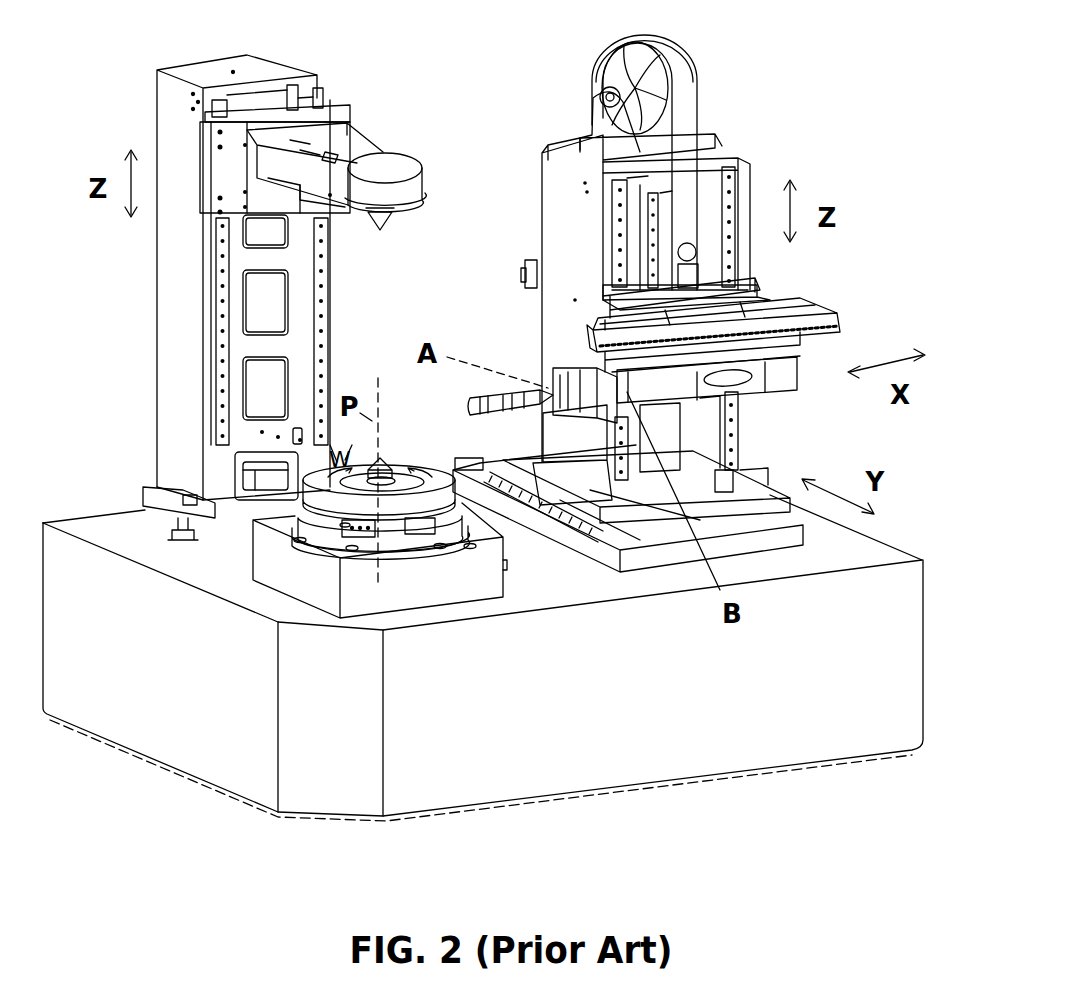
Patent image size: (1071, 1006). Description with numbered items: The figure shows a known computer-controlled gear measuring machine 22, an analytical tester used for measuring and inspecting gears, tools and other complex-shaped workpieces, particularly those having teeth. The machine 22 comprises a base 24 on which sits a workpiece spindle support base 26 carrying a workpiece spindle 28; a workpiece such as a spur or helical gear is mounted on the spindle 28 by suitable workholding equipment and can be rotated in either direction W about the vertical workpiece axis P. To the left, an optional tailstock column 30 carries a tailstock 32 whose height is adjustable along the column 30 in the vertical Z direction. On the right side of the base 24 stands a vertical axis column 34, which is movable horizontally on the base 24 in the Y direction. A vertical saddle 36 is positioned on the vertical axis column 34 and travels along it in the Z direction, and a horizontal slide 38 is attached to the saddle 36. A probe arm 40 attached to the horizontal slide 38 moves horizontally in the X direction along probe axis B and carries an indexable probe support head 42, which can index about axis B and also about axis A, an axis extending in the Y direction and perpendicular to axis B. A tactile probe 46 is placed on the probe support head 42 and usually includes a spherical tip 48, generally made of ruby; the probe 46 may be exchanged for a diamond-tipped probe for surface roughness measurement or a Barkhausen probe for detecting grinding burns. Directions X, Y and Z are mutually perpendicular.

The gear measuring machine 22 is at (773, 113).
The base 24 is at (203, 728).
The workpiece spindle support base 26 is at (440, 572).
The workpiece spindle 28 is at (243, 528).
The tailstock column 30 is at (182, 298).
The tailstock 32 is at (371, 157).
The vertical axis column 34 is at (557, 178).
The vertical saddle 36 is at (757, 288).
The horizontal slide 38 is at (820, 323).
The probe arm 40 is at (683, 407).
The probe support head 42 is at (553, 375).
The tactile probe 46 is at (525, 400).
The spherical tip 48 is at (478, 408).